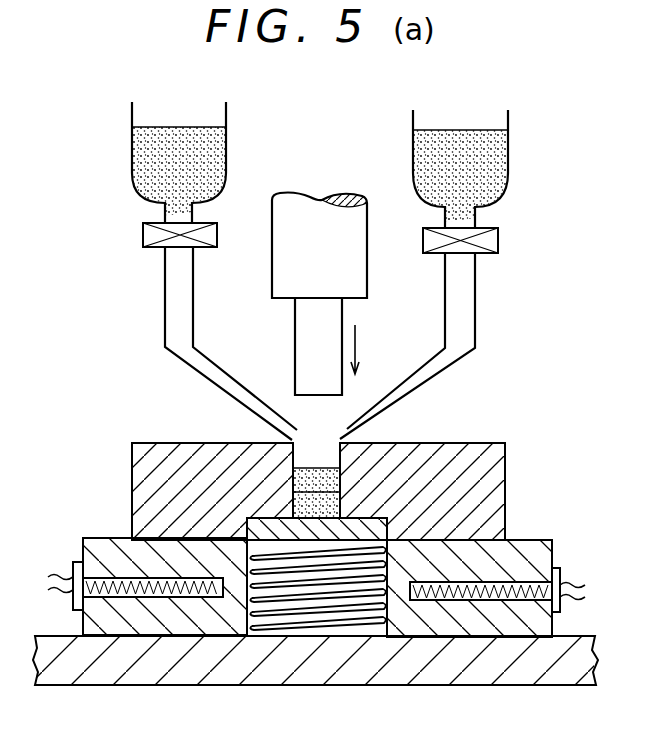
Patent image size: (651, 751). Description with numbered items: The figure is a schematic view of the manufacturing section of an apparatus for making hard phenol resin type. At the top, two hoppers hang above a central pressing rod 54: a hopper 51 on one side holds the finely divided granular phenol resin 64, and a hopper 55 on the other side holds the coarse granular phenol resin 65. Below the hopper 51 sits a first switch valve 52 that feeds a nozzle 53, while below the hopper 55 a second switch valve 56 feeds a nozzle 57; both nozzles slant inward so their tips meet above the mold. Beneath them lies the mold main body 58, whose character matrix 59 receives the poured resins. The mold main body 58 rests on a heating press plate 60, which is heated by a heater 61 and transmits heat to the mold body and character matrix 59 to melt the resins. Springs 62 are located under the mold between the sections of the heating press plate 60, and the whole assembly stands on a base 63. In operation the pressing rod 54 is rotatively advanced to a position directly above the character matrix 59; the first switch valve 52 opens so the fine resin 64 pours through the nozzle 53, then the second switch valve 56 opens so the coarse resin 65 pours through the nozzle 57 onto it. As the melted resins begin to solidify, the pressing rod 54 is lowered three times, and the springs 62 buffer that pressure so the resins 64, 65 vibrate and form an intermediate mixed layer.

The hopper 51 is at (510, 119).
The first switch valve 52 is at (498, 240).
The nozzle 53 is at (405, 398).
The pressing rod 54 is at (367, 243).
The hopper 55 is at (228, 112).
The second switch valve 56 is at (217, 232).
The nozzle 57 is at (233, 397).
The mold main body 58 is at (500, 488).
The character matrix 59 is at (505, 444).
The heating press plate 60 is at (545, 540).
The heater 61 is at (98, 577).
The springs 62 is at (405, 625).
The base plate 63 is at (367, 686).
The finely divided granular phenol resin 64 is at (470, 130).
The coarse granular phenol resin 65 is at (190, 127).